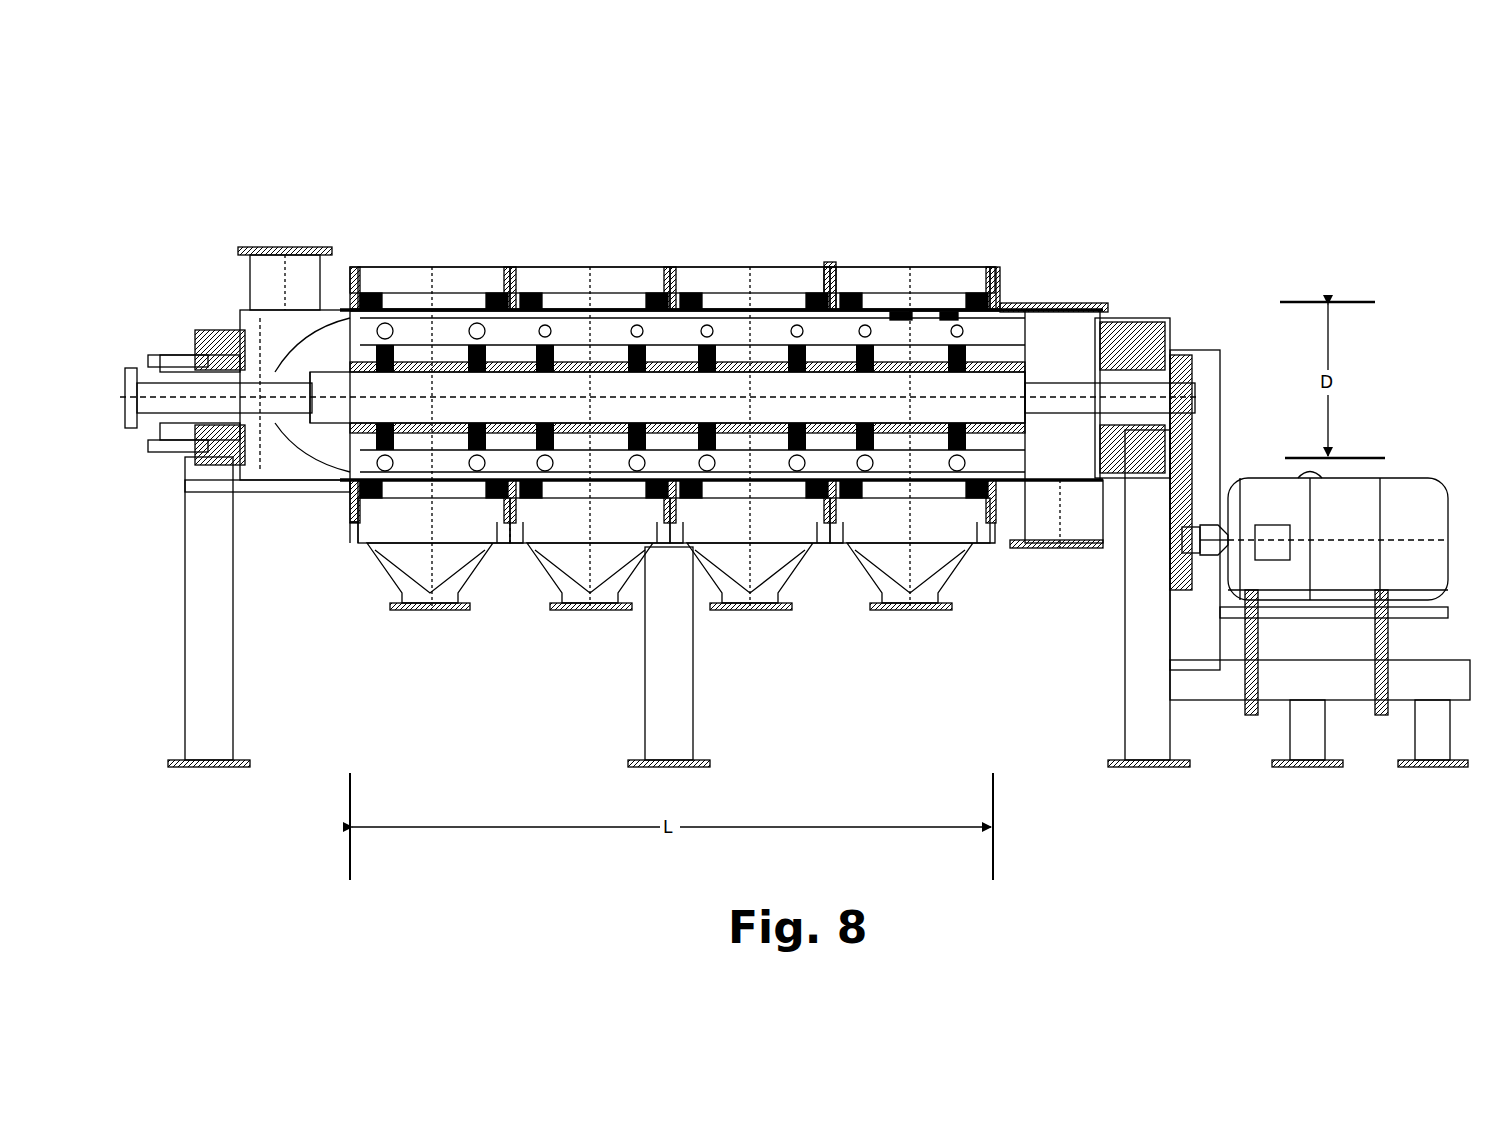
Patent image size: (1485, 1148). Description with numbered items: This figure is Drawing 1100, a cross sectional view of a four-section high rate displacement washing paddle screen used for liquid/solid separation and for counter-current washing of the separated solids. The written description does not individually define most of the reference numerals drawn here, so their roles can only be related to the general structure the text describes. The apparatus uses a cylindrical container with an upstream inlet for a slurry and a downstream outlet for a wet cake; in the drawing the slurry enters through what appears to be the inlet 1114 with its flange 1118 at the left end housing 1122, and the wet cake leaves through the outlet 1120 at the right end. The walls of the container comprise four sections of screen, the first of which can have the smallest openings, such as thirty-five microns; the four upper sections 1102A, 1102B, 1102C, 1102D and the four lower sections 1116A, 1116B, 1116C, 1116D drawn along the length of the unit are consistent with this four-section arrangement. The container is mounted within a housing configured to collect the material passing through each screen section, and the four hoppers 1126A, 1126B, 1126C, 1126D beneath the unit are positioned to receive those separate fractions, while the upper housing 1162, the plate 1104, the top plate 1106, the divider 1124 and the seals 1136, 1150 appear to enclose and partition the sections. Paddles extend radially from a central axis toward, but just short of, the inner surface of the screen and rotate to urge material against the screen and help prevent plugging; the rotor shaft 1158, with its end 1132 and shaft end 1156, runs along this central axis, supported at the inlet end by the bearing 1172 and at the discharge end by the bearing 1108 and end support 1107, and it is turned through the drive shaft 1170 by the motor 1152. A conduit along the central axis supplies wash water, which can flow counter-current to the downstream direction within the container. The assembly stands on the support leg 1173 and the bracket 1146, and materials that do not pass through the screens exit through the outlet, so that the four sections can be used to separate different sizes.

The drawing 1100 is at (165, 62).
The first upper chamber 1102A is at (462, 308).
The second upper chamber 1102B is at (570, 308).
The third upper chamber 1102C is at (732, 308).
The fourth upper chamber 1102D is at (858, 308).
The housing plate 1104 is at (640, 305).
The top plate 1106 is at (1045, 300).
The end support 1107 is at (1005, 270).
The outlet bearing 1108 is at (1115, 312).
The inlet 1114 is at (178, 388).
The first lower chamber 1116A is at (430, 511).
The second lower chamber 1116B is at (587, 511).
The third lower chamber 1116C is at (747, 511).
The fourth lower chamber 1116D is at (910, 511).
The inlet flange 1118 is at (270, 250).
The outlet 1120 is at (1048, 553).
The inlet end housing 1122 is at (232, 303).
The divider 1124 is at (828, 262).
The first hopper 1126A is at (428, 612).
The second hopper 1126B is at (588, 612).
The third hopper 1126C is at (748, 612).
The fourth hopper 1126D is at (908, 612).
The rotor end 1132 is at (395, 398).
The seal 1136 is at (900, 315).
The support bracket 1146 is at (348, 518).
The seal 1150 is at (947, 305).
The motor 1152 is at (1350, 520).
The shaft end 1156 is at (112, 410).
The rotor shaft 1158 is at (594, 412).
The upper housing 1162 is at (420, 265).
The drive shaft 1170 is at (1165, 383).
The inlet bearing 1172 is at (212, 326).
The support leg 1173 is at (212, 494).